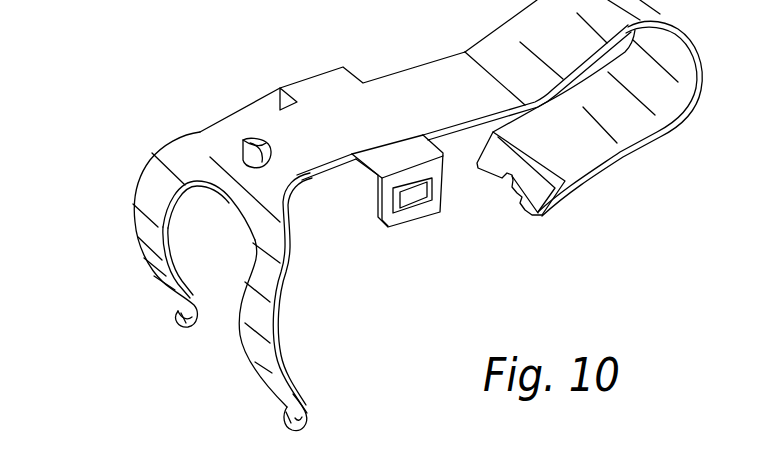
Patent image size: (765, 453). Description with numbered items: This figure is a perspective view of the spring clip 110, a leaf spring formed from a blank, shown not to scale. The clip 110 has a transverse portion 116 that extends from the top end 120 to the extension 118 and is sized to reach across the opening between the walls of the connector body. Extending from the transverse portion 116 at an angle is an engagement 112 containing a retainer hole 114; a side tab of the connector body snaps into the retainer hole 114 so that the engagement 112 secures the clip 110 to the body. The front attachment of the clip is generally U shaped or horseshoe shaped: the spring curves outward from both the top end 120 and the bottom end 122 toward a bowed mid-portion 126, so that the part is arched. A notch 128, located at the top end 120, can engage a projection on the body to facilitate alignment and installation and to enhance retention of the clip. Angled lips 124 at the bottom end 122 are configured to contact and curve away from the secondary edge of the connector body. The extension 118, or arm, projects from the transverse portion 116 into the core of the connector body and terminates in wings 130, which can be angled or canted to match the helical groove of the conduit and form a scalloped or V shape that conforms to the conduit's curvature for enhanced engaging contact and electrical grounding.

The spring clip 110 is at (124, 60).
The engagement 112 is at (433, 215).
The retainer hole 114 is at (405, 198).
The transverse portion 116 is at (352, 143).
The extension 118 is at (603, 146).
The top end 120 is at (195, 150).
The bottom end 122 is at (320, 390).
The angled lip 124 is at (178, 328).
The mid-portion 126 is at (158, 195).
The notch 128 is at (266, 143).
The wings 130 is at (519, 205).